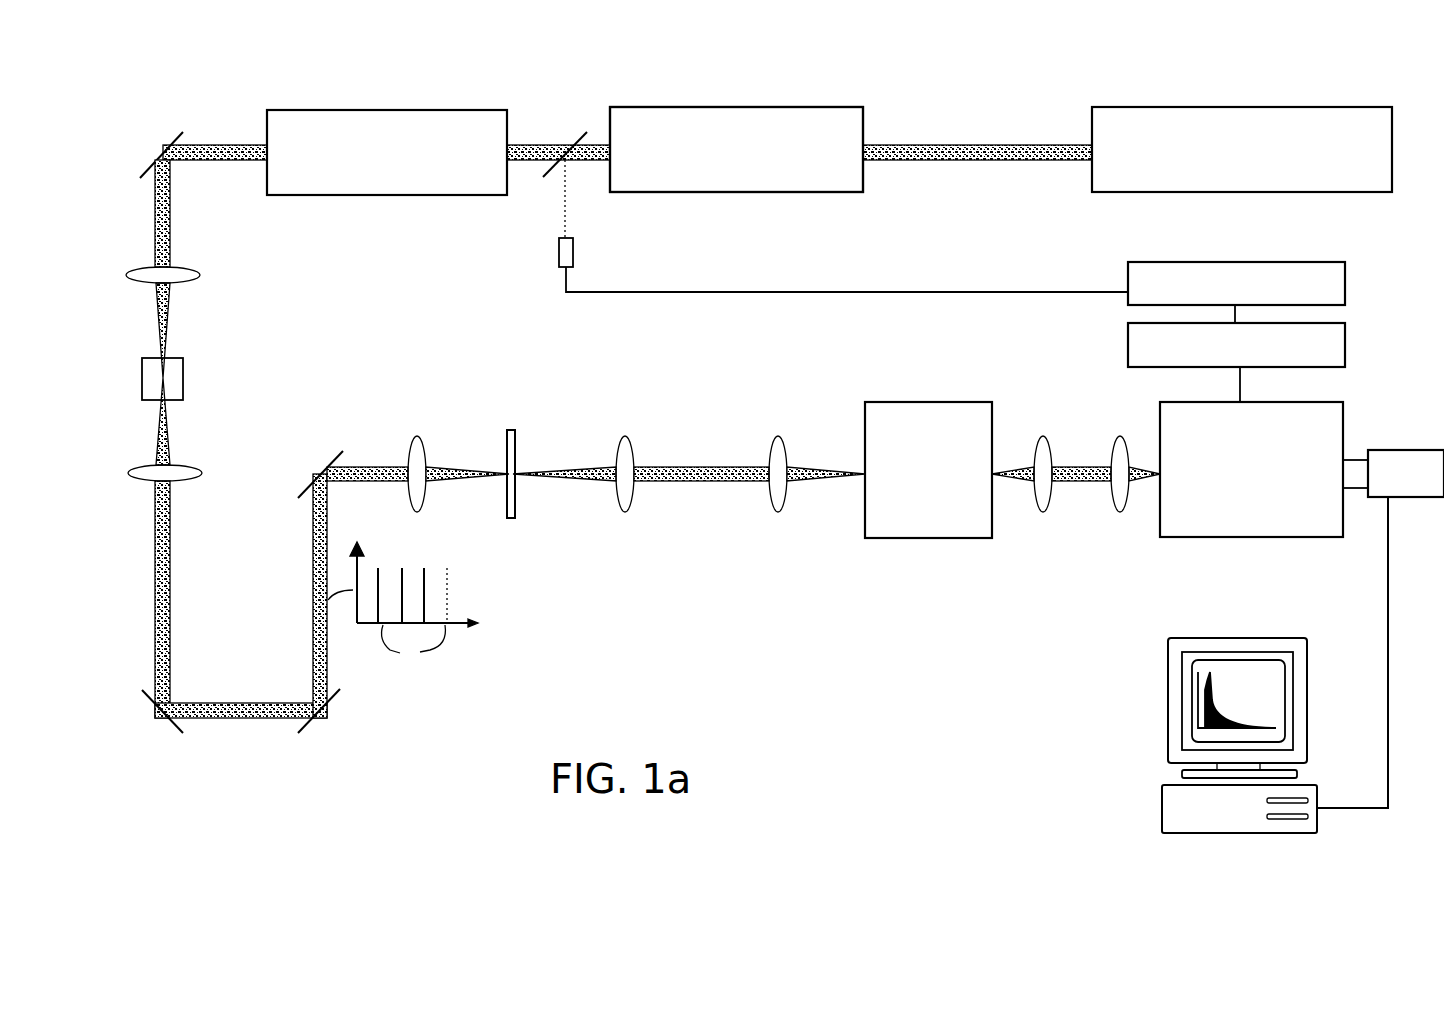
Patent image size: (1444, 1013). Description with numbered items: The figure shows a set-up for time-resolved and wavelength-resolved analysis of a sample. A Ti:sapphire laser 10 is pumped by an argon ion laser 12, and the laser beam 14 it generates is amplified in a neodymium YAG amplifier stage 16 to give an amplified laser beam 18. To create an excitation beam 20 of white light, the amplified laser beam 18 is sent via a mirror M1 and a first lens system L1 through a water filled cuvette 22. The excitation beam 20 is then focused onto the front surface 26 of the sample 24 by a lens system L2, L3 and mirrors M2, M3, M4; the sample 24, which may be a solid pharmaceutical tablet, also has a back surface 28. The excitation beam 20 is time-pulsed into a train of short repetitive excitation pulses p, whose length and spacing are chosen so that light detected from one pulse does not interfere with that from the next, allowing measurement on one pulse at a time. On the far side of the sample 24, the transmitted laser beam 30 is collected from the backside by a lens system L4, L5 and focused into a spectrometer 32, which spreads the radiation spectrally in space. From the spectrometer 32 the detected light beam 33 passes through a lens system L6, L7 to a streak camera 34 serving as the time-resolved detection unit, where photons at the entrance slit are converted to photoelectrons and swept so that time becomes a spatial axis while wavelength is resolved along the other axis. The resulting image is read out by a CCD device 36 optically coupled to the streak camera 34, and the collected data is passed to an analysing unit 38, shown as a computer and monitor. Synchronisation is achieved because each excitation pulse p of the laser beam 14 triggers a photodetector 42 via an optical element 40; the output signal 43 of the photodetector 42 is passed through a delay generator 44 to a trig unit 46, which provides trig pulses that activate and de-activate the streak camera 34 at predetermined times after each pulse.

The Ti:sapphire laser 10 is at (722, 107).
The argon ion laser 12 is at (1225, 107).
The laser beam 14 is at (600, 145).
The neodymium YAG amplifier stage 16 is at (381, 110).
The amplified laser beam 18 is at (218, 165).
The excitation beam 20 is at (172, 583).
The water filled cuvette 22 is at (183, 372).
The sample 24 is at (512, 518).
The front surface 26 is at (505, 455).
The back surface 28 is at (520, 455).
The transmitted laser beam 30 is at (712, 483).
The spectrometer 32 is at (927, 538).
The detected light beam 33 is at (1085, 483).
The streak camera 34 is at (1172, 540).
The CCD device 36 is at (1405, 500).
The analysing unit 38 is at (1168, 725).
The optical element 40 is at (563, 175).
The photodetector 42 is at (575, 255).
The output signal 43 is at (760, 297).
The delay generator 44 is at (1128, 272).
The trig unit 46 is at (1128, 350).
The mirror M1 is at (155, 158).
The mirror M2 is at (172, 738).
The mirror M3 is at (330, 707).
The mirror M4 is at (300, 484).
The first lens system L1 is at (187, 278).
The lens system L2 is at (182, 483).
The lens system L3 is at (410, 505).
The lens system L4 is at (620, 505).
The lens system L5 is at (770, 440).
The lens system L6 is at (1032, 500).
The lens system L7 is at (1110, 500).
The excitation pulse p is at (416, 606).